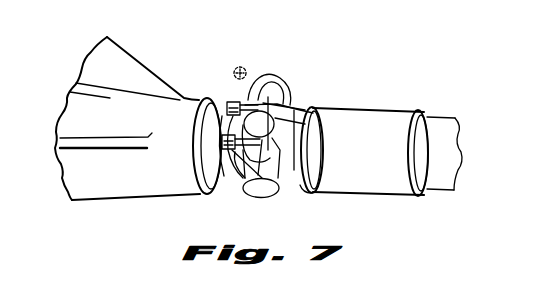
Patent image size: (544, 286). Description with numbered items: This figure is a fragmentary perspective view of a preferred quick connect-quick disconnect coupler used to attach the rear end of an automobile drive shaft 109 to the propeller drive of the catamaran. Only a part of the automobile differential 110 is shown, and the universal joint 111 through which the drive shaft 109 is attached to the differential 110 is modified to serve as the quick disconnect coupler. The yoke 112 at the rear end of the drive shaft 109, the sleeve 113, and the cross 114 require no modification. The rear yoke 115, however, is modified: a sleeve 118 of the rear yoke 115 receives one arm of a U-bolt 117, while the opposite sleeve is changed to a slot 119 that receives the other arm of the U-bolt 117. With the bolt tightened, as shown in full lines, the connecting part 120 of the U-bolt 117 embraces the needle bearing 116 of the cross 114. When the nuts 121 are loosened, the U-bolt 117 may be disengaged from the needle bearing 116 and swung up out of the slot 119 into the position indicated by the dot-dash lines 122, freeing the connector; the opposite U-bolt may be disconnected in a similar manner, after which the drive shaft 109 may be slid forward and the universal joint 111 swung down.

The drive shaft 109 is at (441, 128).
The automobile differential 110 is at (163, 88).
The universal joint 111 is at (283, 143).
The yoke 112 is at (290, 186).
The sleeve 113 is at (370, 121).
The cross 114 is at (250, 173).
The rear yoke 115 is at (252, 100).
The needle bearing 116 is at (286, 104).
The U-bolt 117 is at (289, 78).
The sleeve 118 is at (232, 101).
The slot 119 is at (212, 177).
The connecting part 120 is at (306, 126).
The nuts 121 is at (222, 142).
The phantom arc 122 is at (290, 77).